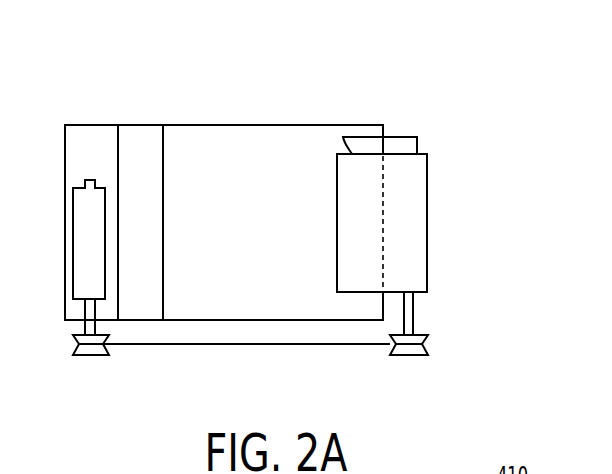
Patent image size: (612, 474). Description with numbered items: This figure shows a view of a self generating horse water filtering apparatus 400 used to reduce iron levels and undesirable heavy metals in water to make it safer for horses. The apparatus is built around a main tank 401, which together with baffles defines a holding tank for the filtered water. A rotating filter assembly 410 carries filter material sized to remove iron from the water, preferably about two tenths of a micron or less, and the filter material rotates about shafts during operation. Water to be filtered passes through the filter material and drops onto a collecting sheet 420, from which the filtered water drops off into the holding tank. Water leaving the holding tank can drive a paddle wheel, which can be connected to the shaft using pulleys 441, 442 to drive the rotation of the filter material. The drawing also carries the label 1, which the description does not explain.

The horse water filtering apparatus 400 is at (298, 86).
The main tank 401 is at (202, 125).
The rotating filter assembly 410 is at (432, 233).
The collecting sheet 420 is at (410, 137).
The pulley 441 is at (407, 356).
The pulley 442 is at (90, 356).
The electrode 1 is at (343, 138).